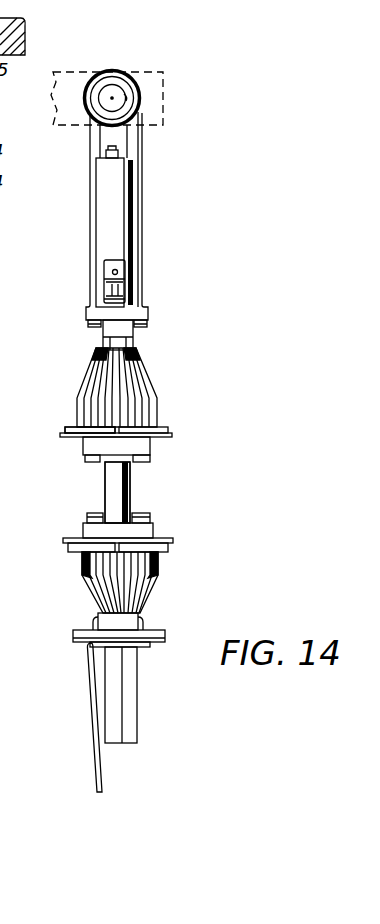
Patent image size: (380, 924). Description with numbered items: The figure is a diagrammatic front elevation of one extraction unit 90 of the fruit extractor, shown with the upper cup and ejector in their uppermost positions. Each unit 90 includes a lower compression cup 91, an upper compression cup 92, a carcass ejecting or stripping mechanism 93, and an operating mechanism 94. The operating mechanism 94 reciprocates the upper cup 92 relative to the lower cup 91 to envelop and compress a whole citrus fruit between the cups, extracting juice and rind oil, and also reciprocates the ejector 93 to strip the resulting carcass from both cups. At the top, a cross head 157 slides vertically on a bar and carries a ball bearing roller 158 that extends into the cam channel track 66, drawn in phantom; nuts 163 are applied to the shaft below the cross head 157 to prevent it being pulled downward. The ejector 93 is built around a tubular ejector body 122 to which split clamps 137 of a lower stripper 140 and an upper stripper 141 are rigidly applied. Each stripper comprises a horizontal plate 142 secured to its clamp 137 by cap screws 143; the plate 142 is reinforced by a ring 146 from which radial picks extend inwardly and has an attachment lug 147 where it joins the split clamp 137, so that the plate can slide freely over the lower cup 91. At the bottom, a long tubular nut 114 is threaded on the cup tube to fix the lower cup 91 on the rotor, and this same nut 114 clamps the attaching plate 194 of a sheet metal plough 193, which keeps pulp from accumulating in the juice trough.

The cam channel track 66 is at (150, 72).
The ball bearing roller 158 is at (141, 97).
The operating mechanism 94 is at (143, 229).
The cross head 157 is at (105, 190).
The nuts 163 is at (120, 153).
The extraction unit 90 is at (201, 348).
The upper compression cup 92 is at (160, 400).
The upper stripper 141 is at (62, 428).
The ring 146 is at (165, 429).
The attachment lug 147 is at (168, 437).
The split clamps 137 is at (84, 444).
The carcass ejecting or stripping mechanism 93 is at (134, 483).
The tubular ejector body 122 is at (108, 491).
The cap screws 143 is at (88, 518).
The horizontal plate 142 is at (162, 540).
The lower stripper 140 is at (64, 544).
The lower compression cup 91 is at (162, 563).
The attaching plate 194 is at (140, 647).
The tubular nut 114 is at (129, 710).
The plough 193 is at (92, 730).